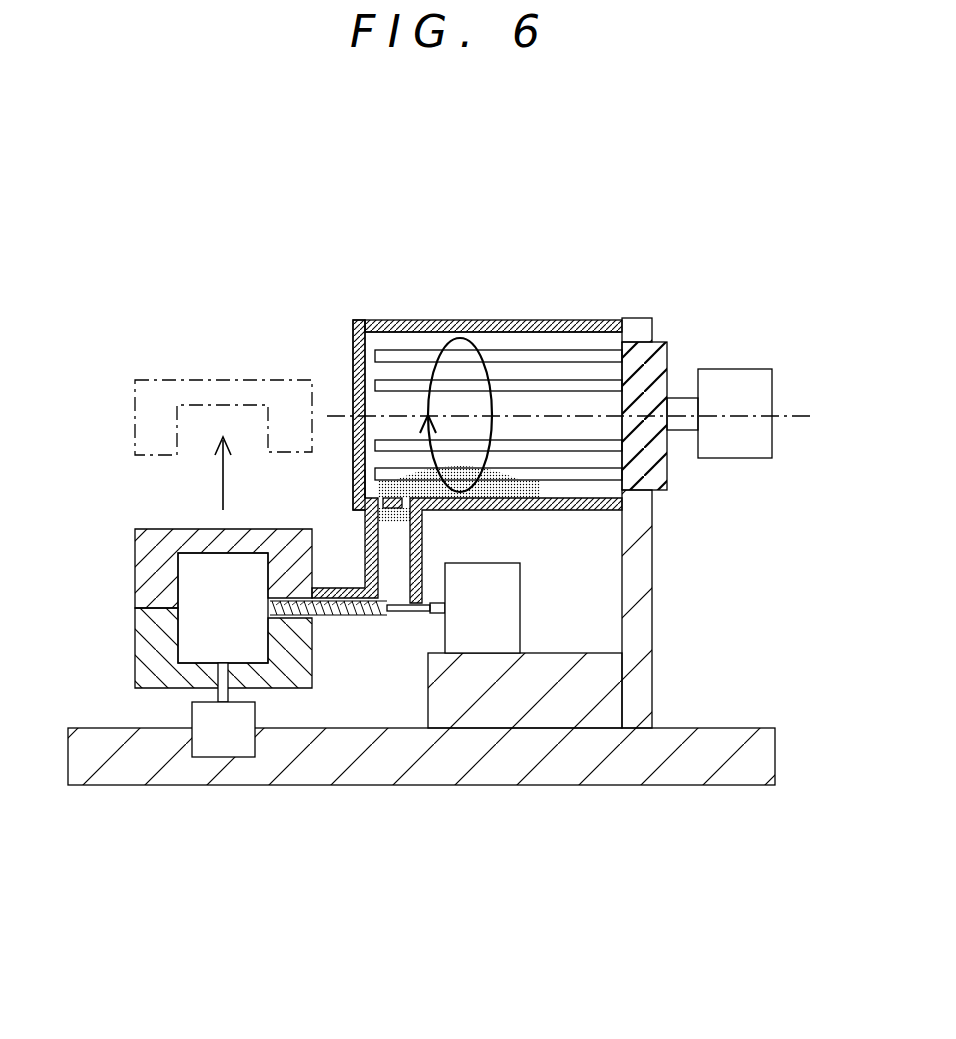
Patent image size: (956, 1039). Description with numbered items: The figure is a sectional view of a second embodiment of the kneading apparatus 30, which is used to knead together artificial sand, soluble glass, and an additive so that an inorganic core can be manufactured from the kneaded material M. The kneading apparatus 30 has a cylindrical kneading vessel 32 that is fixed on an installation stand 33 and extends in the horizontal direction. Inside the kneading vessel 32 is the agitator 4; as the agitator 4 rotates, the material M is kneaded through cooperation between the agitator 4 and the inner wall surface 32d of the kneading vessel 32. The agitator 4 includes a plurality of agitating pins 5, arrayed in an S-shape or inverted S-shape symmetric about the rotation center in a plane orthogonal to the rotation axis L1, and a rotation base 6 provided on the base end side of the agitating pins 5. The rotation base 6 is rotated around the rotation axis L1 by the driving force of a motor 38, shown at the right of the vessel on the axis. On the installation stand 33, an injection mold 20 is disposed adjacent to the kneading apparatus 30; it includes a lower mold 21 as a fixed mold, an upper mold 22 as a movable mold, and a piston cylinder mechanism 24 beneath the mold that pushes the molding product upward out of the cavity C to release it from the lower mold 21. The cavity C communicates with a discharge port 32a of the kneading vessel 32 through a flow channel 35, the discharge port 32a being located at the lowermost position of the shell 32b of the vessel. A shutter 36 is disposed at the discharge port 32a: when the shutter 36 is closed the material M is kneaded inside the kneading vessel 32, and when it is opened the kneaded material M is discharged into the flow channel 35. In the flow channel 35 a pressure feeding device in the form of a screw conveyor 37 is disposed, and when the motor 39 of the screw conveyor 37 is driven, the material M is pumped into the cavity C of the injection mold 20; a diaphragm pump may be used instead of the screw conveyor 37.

The agitator 4 is at (553, 229).
The agitating pins 5 is at (576, 350).
The rotation base 6 is at (656, 348).
The injection mold 20 is at (178, 653).
The lower mold 21 is at (135, 645).
The upper mold 22 is at (135, 575).
The piston cylinder mechanism 24 is at (186, 748).
The kneading apparatus 30 is at (724, 254).
The kneading vessel 32 is at (456, 403).
The discharge port 32a is at (372, 467).
The shell 32b is at (382, 322).
The inner wall surface 32d is at (432, 338).
The installation stand 33 is at (388, 778).
The flow channel 35 is at (395, 550).
The shutter 36 is at (397, 512).
The screw conveyor 37 is at (345, 632).
The motor 38 is at (745, 450).
The motor 39 is at (507, 630).
The cavity C is at (245, 568).
The material M is at (523, 507).
The rotation axis L1 is at (810, 412).